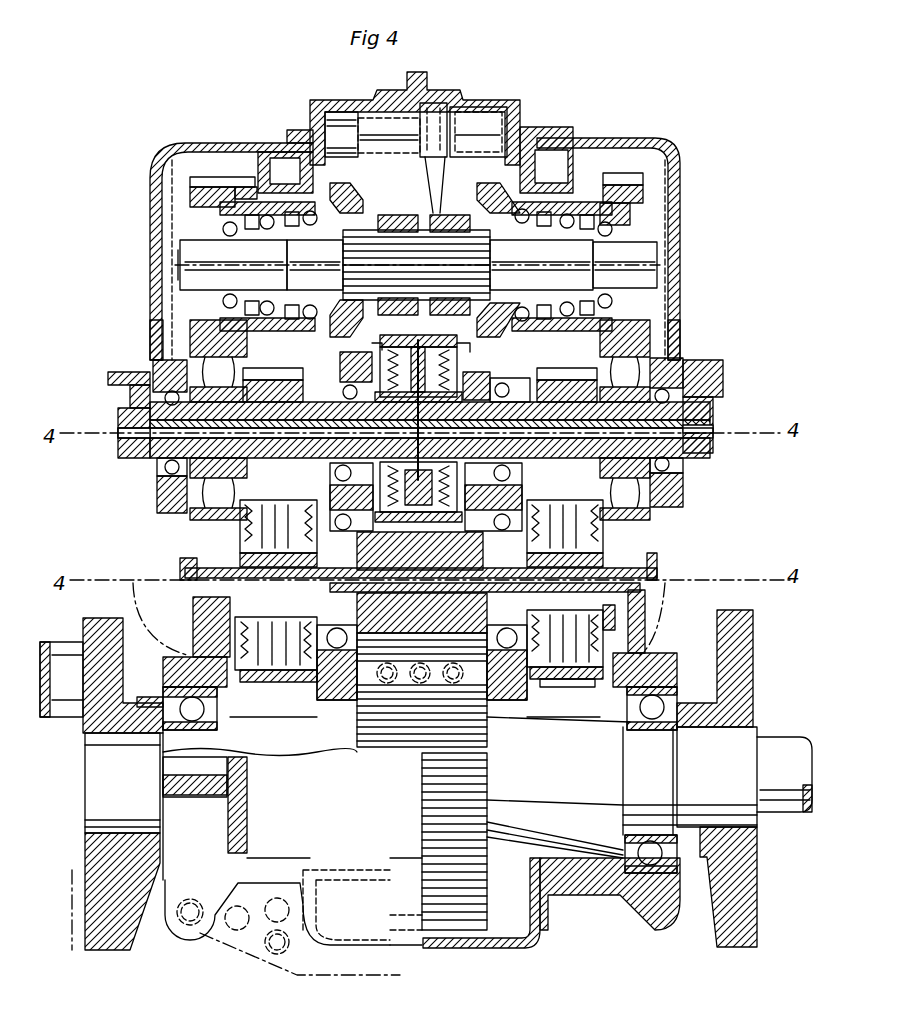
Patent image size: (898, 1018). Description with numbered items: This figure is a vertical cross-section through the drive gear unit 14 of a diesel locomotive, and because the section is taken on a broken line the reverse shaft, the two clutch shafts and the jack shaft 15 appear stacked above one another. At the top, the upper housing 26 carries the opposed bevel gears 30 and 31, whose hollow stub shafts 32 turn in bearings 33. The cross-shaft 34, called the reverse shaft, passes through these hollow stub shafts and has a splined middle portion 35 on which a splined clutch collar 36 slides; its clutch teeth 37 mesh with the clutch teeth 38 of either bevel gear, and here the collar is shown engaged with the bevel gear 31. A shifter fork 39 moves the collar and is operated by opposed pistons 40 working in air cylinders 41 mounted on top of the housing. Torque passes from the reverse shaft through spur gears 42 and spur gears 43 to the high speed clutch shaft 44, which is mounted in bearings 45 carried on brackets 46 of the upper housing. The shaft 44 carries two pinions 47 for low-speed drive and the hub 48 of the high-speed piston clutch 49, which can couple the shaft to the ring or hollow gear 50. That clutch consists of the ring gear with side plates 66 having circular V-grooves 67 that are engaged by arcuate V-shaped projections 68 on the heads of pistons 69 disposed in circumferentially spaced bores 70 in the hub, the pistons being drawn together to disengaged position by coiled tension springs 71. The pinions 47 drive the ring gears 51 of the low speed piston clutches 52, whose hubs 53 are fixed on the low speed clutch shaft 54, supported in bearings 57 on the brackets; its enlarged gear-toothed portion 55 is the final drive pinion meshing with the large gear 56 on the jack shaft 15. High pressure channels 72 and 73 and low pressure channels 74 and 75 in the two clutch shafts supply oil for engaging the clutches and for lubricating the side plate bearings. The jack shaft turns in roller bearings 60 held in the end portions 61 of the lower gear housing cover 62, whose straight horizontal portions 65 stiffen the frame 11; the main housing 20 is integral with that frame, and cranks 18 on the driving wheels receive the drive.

The drive gear unit 14 is at (219, 133).
The upper housing 26 is at (580, 148).
The opposed pistons 40 is at (475, 120).
The cylinders 41 is at (467, 100).
The spur gears 42 is at (207, 185).
The spur gears 43 is at (197, 358).
The bevel gear 30 is at (352, 196).
The bevel gear 31 is at (490, 192).
The clutch teeth 38 is at (362, 216).
The splined clutch collar 36 is at (408, 215).
The shifter fork 39 is at (425, 195).
The bearings 33 is at (262, 248).
The hollow stub shafts 32 is at (326, 248).
The clutch teeth 37 is at (390, 230).
The cross-shaft 34 is at (618, 250).
The splined middle portion 35 is at (470, 343).
The hub 48 is at (415, 340).
The piston clutch 49 is at (445, 340).
The ring or hollow gear 50 is at (384, 341).
The side plates 66 is at (375, 350).
The circular V-grooves 67 is at (380, 392).
The arcuate V-shaped projections 68 is at (378, 410).
The pistons 69 is at (409, 409).
The bores 70 is at (438, 411).
The coiled tension springs 71 is at (425, 448).
The high pressure channel 72 is at (241, 404).
The high pressure channel 73 is at (385, 540).
The low pressure channel 74 is at (585, 391).
The low pressure channel 75 is at (500, 545).
The pinions 47 is at (277, 378).
The bearings 45 is at (158, 467).
The brackets 46 is at (160, 497).
The high speed clutch shaft 44 is at (683, 493).
The main housing 20 is at (130, 398).
The cranks 18 is at (102, 620).
The frame 11 is at (163, 788).
The jack shaft 15 is at (622, 787).
The gear-toothed portion 55 is at (422, 613).
The bearings 57 is at (400, 694).
The large gear 56 is at (485, 920).
The low speed piston clutches 52 is at (250, 688).
The ring or hollow gears 51 is at (262, 682).
The hubs 53 is at (550, 688).
The low speed clutch shaft 54 is at (598, 610).
The roller bearings 60 is at (677, 698).
The end portions 61 is at (660, 925).
The lower gear housing cover 62 is at (520, 950).
The straight horizontal portions 65 is at (580, 890).